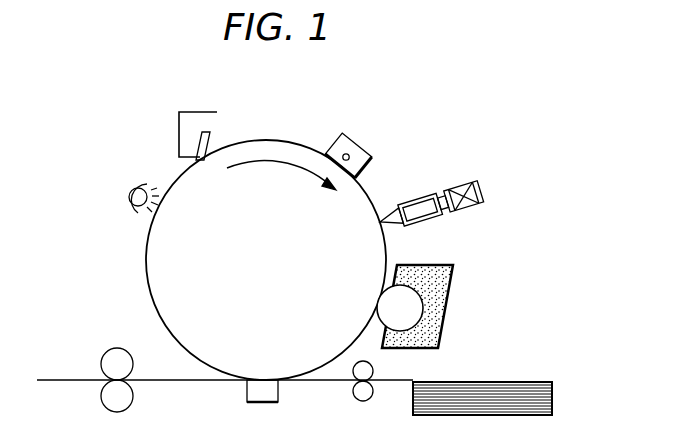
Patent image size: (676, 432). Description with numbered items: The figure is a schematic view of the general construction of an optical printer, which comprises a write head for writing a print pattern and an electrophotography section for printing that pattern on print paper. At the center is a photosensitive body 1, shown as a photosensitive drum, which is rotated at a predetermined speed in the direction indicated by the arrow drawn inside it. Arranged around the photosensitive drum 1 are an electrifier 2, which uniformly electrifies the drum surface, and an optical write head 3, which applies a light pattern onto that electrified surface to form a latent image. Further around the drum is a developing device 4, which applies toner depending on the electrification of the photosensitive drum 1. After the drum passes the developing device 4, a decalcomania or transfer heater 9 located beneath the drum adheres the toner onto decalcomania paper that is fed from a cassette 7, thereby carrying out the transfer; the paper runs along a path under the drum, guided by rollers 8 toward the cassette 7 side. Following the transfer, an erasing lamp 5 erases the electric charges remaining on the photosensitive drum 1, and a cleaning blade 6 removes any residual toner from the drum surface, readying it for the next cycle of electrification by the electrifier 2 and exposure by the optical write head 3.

The photosensitive body 1 is at (269, 148).
The electrifier 2 is at (366, 150).
The optical write head 3 is at (462, 184).
The developing device 4 is at (446, 311).
The erasing lamp 5 is at (131, 186).
The cleaning blade 6 is at (179, 121).
The cassette 7 is at (553, 386).
The feed rollers 8 is at (180, 380).
The transfer heater 9 is at (280, 388).